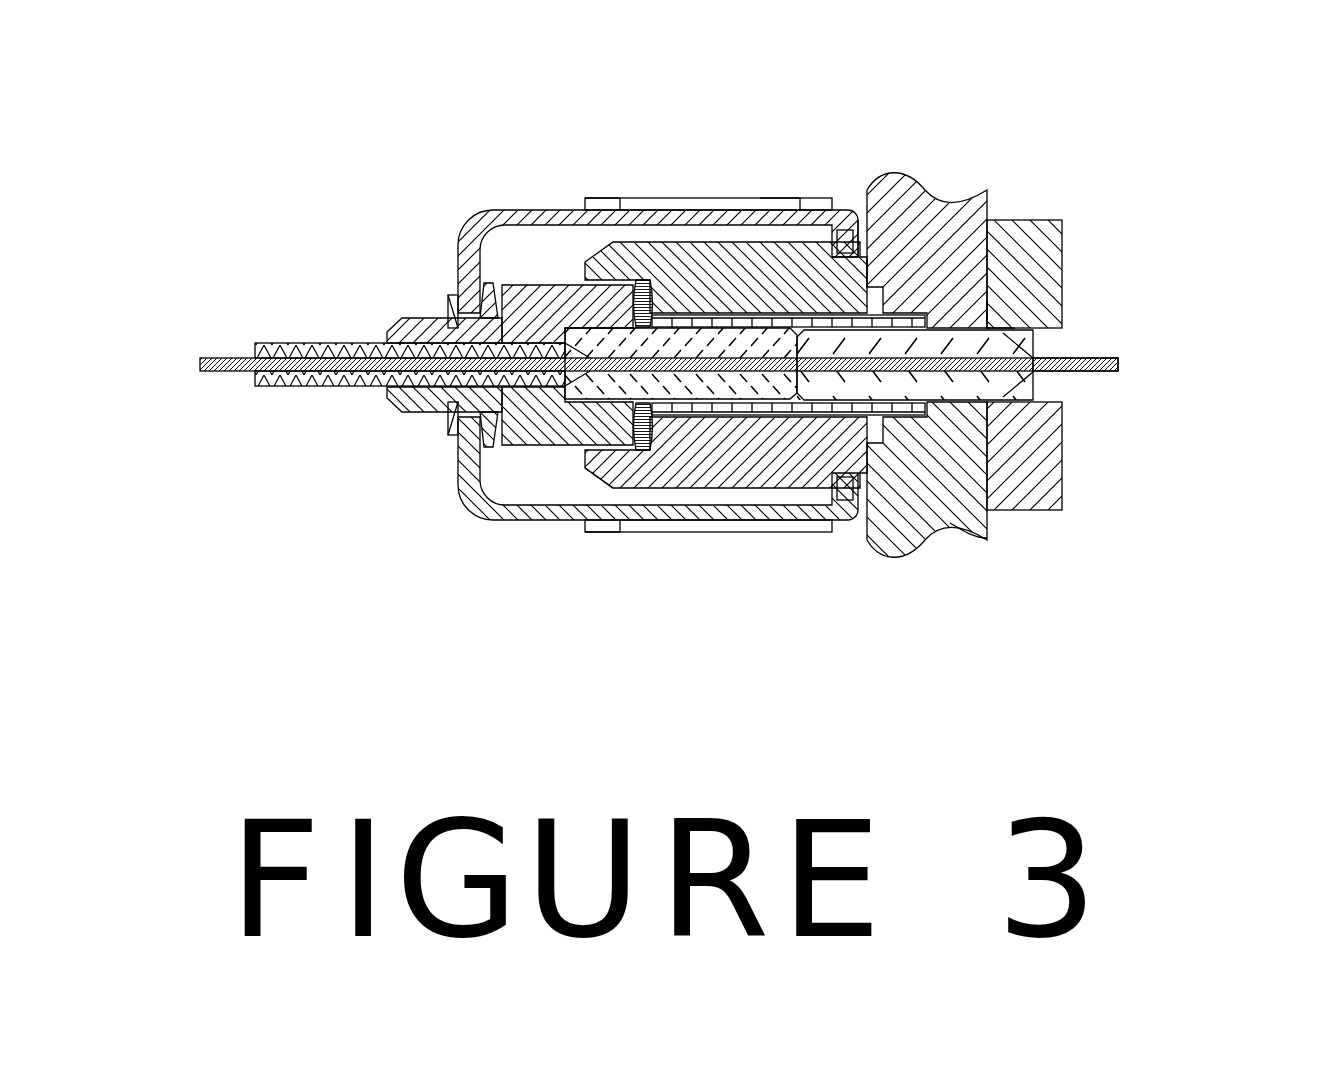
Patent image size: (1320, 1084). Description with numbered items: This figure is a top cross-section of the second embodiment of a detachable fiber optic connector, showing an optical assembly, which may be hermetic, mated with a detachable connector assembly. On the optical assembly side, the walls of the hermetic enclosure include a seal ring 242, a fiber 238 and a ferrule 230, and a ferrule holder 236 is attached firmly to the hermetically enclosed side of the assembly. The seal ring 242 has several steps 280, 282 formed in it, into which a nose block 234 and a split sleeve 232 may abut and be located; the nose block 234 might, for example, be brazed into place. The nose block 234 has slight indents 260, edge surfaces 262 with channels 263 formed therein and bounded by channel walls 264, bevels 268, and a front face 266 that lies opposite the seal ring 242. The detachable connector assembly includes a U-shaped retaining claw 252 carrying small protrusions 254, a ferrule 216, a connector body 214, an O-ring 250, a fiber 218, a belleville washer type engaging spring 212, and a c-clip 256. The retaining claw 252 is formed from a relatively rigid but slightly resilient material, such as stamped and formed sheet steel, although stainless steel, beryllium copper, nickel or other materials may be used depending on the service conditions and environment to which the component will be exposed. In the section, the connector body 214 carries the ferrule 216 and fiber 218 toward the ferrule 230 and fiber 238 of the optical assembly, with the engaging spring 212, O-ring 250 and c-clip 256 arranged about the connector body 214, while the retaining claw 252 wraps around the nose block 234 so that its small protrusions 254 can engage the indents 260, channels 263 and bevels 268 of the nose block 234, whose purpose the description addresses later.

The belleville washer type engaging spring 212 is at (477, 296).
The connector body 214 is at (413, 328).
The ferrule 216 is at (607, 387).
The fiber 218 is at (200, 366).
The ferrule 230 is at (968, 396).
The split sleeve 232 is at (910, 408).
The nose block 234 is at (810, 257).
The ferrule holder 236 is at (1032, 462).
The fiber 238 is at (1120, 365).
The seal ring 242 is at (977, 524).
The O-ring 250 is at (633, 300).
The retaining claw 252 is at (483, 507).
The small protrusions 254 is at (843, 503).
The c-clip 256 is at (450, 418).
The indents 260 is at (860, 257).
The edge surfaces 262 is at (660, 208).
The channels 263 is at (641, 300).
The channel walls 264 is at (603, 203).
The front face 266 is at (580, 524).
The bevels 268 is at (601, 485).
The step 280 is at (867, 287).
The step 282 is at (990, 327).